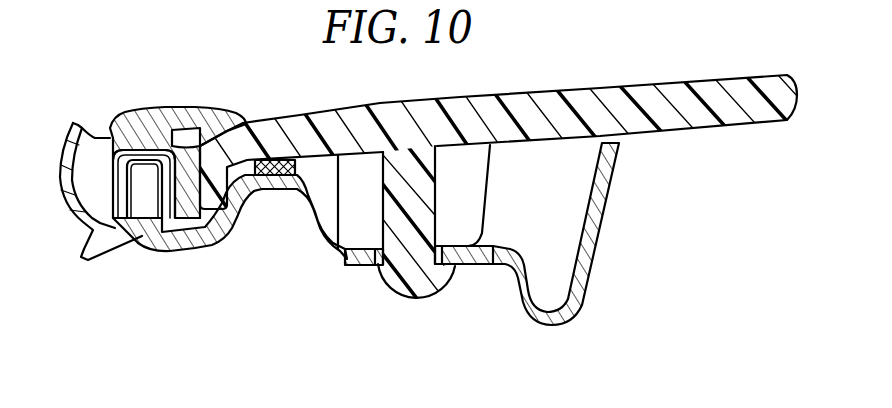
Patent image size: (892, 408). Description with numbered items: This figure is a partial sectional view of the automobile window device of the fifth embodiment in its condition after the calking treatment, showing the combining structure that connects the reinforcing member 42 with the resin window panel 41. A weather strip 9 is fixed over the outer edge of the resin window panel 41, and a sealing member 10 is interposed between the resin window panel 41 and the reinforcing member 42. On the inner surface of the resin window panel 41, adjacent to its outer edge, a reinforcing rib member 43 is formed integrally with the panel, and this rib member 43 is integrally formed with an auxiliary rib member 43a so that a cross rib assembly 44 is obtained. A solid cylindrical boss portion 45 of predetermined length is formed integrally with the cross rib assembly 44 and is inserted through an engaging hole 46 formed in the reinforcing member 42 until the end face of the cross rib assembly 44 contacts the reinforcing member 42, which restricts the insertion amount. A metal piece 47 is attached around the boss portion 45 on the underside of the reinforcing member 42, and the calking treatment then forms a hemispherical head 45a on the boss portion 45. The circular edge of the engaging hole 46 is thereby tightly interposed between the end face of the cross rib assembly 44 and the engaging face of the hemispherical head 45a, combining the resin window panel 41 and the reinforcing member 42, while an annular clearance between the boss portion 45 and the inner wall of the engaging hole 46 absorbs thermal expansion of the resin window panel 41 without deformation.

The weather strip 9 is at (168, 107).
The sealing member 10 is at (270, 176).
The resin window panel 41 is at (578, 90).
The reinforcing member 42 is at (540, 318).
The reinforcing rib member 43 is at (427, 193).
The auxiliary rib member 43a is at (462, 163).
The cross rib assembly 44 is at (537, 152).
The solid cylindrical boss portion 45 is at (390, 282).
The hemispherical head 45a is at (398, 295).
The engaging hole 46 is at (360, 255).
The metal piece 47 is at (460, 268).